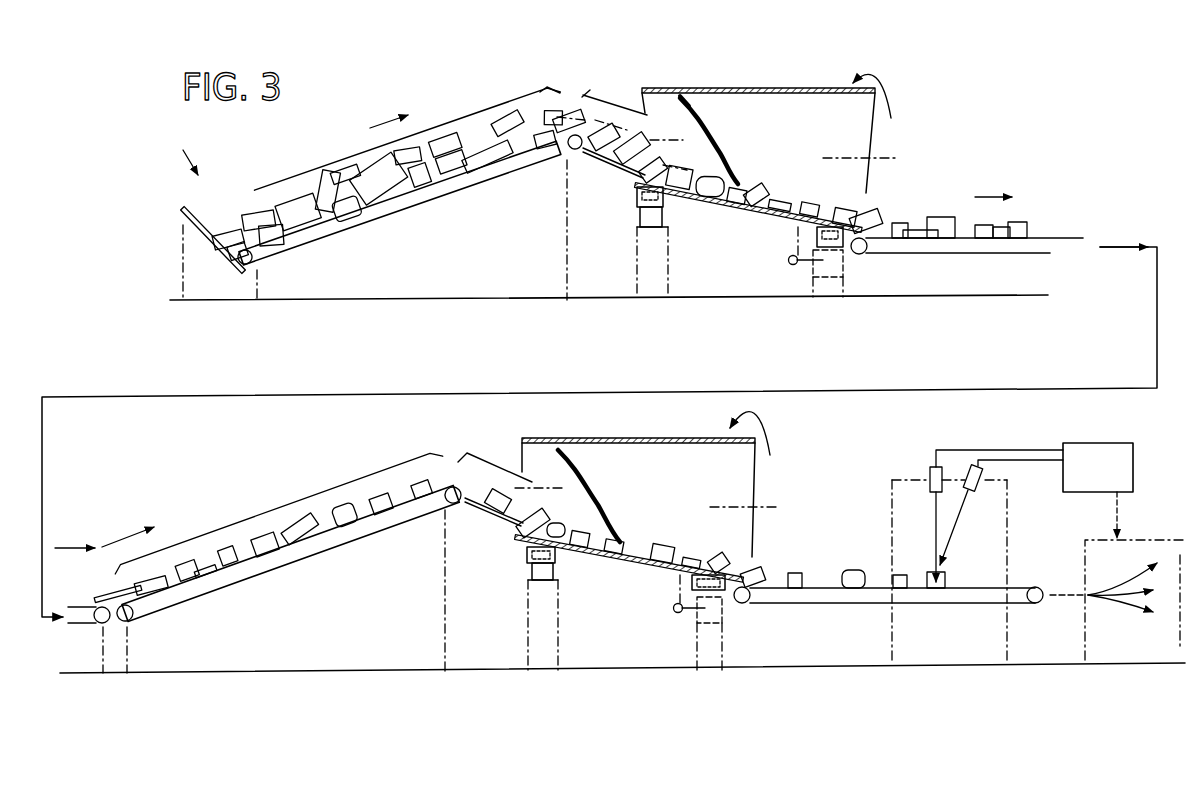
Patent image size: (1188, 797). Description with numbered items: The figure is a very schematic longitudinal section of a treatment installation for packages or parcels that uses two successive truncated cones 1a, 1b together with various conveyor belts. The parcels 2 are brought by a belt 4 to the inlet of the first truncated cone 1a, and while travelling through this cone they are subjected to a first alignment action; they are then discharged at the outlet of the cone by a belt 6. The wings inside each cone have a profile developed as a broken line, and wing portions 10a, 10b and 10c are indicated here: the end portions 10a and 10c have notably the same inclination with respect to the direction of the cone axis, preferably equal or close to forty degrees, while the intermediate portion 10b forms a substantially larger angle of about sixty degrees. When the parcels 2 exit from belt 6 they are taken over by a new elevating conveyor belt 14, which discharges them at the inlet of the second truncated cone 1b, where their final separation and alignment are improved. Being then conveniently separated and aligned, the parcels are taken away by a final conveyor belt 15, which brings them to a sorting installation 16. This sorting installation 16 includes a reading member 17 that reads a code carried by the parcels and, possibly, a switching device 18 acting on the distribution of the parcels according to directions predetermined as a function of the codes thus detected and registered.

The first truncated cone 1a is at (797, 85).
The second truncated cone 1b is at (622, 440).
The parcels 2 is at (403, 158).
The belt 4 is at (393, 212).
The belt 6 is at (1048, 241).
The end portion of wing 10a is at (712, 66).
The intermediate portion of wing 10b is at (722, 150).
The end portion of wing 10c is at (737, 181).
The elevating conveyor belt 14 is at (370, 536).
The final conveyor belt 15 is at (848, 604).
The sorting installation 16 is at (1157, 516).
The reading member 17 is at (1108, 442).
The switching device 18 is at (1095, 637).